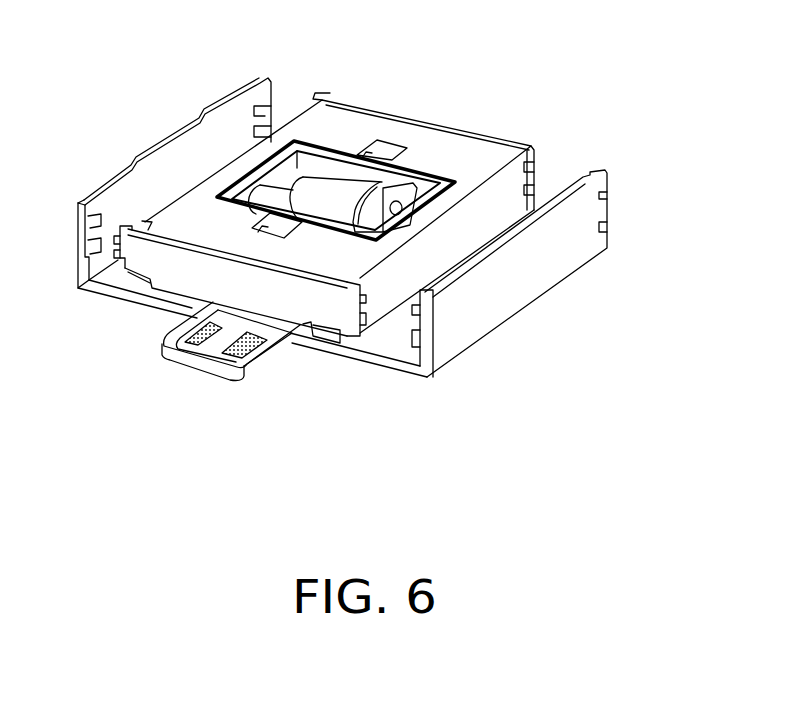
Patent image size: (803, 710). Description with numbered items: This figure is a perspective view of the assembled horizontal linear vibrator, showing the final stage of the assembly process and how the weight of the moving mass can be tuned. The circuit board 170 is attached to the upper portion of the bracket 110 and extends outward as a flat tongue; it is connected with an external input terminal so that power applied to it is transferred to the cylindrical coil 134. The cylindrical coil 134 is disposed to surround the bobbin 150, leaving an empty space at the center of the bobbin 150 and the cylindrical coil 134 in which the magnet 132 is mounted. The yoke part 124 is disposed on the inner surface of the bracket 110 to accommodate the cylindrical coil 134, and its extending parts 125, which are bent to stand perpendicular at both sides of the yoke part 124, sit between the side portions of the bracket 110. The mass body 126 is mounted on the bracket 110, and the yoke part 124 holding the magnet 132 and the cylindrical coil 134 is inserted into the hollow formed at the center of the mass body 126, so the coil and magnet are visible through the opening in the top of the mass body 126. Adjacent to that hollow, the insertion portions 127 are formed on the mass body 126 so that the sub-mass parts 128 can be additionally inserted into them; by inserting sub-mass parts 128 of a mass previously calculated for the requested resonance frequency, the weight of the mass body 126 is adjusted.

The bracket 110 is at (537, 297).
The yoke part 124 is at (420, 168).
The extending parts 125 is at (327, 308).
The mass body 126 is at (503, 148).
The insertion portions 127 is at (372, 147).
The sub-mass parts 128 is at (270, 224).
The magnet 132 is at (273, 188).
The cylindrical coil 134 is at (328, 172).
The bobbin 150 is at (497, 157).
The circuit board 170 is at (197, 348).